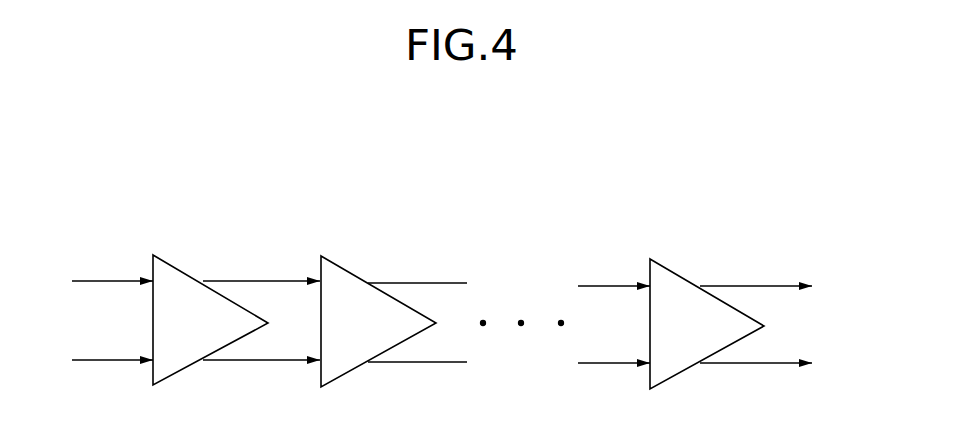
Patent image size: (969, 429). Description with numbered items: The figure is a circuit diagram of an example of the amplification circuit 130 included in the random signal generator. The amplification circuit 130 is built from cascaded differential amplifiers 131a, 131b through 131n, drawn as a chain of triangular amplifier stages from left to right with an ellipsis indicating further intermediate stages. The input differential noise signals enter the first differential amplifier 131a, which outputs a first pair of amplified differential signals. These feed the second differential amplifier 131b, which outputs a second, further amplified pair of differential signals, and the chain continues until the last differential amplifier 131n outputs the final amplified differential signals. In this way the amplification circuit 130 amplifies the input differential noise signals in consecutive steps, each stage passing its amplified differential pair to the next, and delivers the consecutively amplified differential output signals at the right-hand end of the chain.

The amplification circuit 130 is at (483, 164).
The differential amplifier 131a is at (185, 273).
The differential amplifier 131b is at (351, 274).
The differential amplifier 131n is at (681, 277).